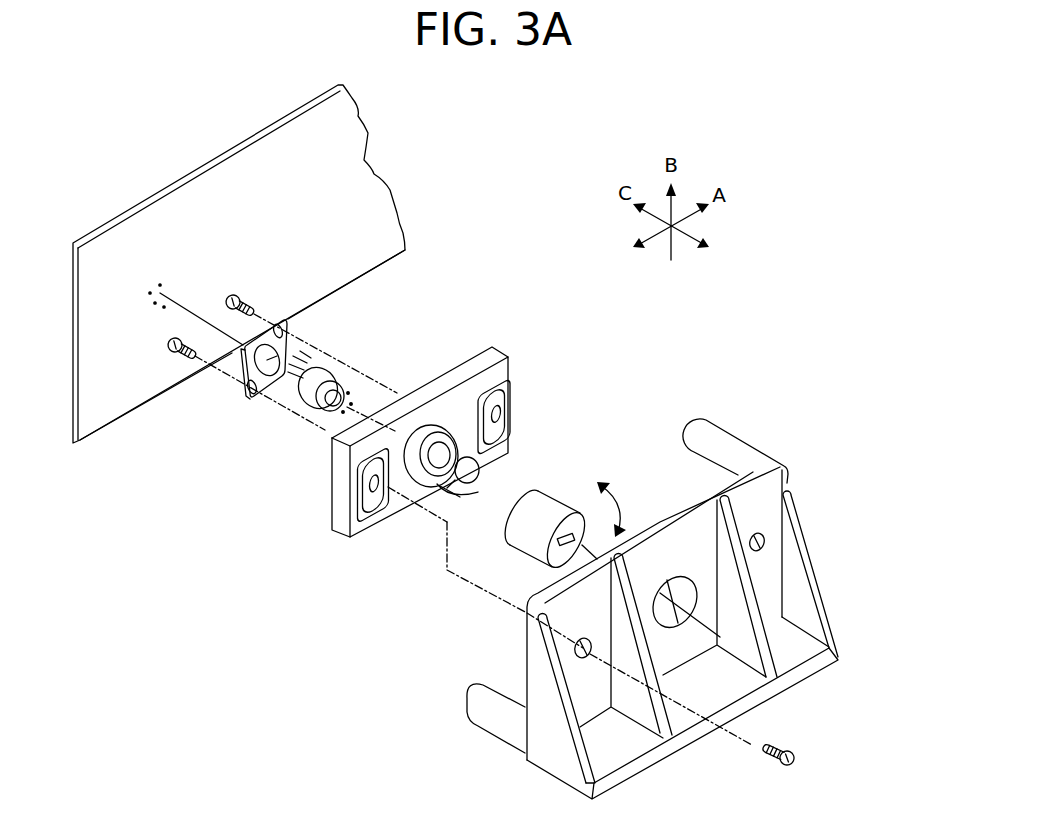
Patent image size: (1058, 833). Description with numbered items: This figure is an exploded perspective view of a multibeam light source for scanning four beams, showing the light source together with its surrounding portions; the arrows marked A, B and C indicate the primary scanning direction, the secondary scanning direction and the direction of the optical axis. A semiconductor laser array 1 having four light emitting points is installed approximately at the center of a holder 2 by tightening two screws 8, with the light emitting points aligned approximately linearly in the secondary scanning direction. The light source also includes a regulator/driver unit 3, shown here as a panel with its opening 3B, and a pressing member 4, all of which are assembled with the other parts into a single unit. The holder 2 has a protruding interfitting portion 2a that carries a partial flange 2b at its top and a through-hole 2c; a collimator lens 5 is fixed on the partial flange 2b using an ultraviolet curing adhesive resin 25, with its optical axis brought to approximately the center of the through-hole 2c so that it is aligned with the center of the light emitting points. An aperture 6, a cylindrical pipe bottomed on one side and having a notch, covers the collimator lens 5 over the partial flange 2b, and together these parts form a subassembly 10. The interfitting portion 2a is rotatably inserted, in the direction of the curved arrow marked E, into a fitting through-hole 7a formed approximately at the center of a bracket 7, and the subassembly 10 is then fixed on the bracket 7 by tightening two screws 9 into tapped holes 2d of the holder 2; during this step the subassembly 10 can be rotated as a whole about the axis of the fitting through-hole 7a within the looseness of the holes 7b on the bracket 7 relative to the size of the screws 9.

The semiconductor laser array 1 is at (346, 372).
The holder 2 is at (474, 342).
The interfitting portion 2a is at (427, 430).
The partial flange 2b is at (435, 490).
The through-hole 2c is at (445, 452).
The tapped holes 2d is at (497, 416).
The regulator/driver unit 3 is at (223, 193).
The opening in panel 3B is at (338, 418).
The pressing member 4 is at (242, 360).
The collimator lens 5 is at (470, 485).
The aperture 6 is at (548, 505).
The bracket 7 is at (700, 713).
The fitting through-hole 7a is at (693, 583).
The holes 7b is at (575, 644).
The screws 8 is at (227, 296).
The screws 9 is at (780, 766).
The subassembly 10 is at (545, 371).
The ultraviolet curing adhesive resin 25 is at (435, 488).